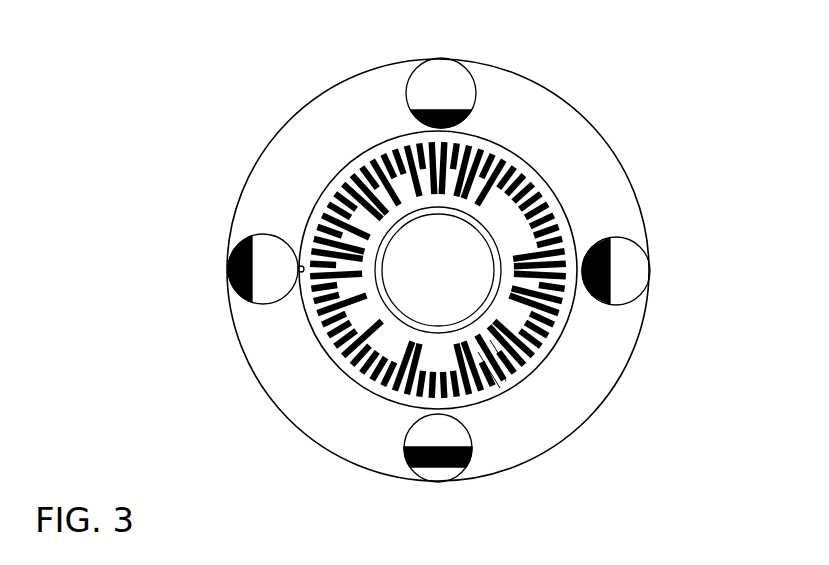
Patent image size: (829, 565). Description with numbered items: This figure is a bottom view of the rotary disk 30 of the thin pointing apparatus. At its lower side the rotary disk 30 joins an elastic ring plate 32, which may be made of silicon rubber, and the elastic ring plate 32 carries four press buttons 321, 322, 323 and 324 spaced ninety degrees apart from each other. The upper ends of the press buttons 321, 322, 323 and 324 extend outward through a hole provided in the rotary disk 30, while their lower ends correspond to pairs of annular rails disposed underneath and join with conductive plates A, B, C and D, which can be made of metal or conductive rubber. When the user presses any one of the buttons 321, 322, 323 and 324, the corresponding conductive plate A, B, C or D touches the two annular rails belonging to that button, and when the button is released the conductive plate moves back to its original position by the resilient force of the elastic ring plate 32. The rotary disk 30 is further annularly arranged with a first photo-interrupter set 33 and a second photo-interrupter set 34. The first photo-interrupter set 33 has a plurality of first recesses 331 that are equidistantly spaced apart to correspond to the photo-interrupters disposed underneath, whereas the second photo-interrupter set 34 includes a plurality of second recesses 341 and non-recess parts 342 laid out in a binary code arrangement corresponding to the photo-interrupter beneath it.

The rotary disk 30 is at (297, 89).
The elastic ring plate 32 is at (268, 317).
The first photo-interrupter set 33 is at (563, 353).
The first recesses 331 is at (556, 343).
The second photo-interrupter set 34 is at (557, 433).
The second recesses 341 is at (490, 380).
The non-recess parts 342 is at (503, 367).
The press button 321 is at (226, 233).
The press button 322 is at (375, 480).
The press button 323 is at (645, 240).
The press button 324 is at (510, 64).
The conductive plate A is at (273, 268).
The conductive plate B is at (432, 435).
The conductive plate C is at (620, 252).
The conductive plate D is at (452, 92).